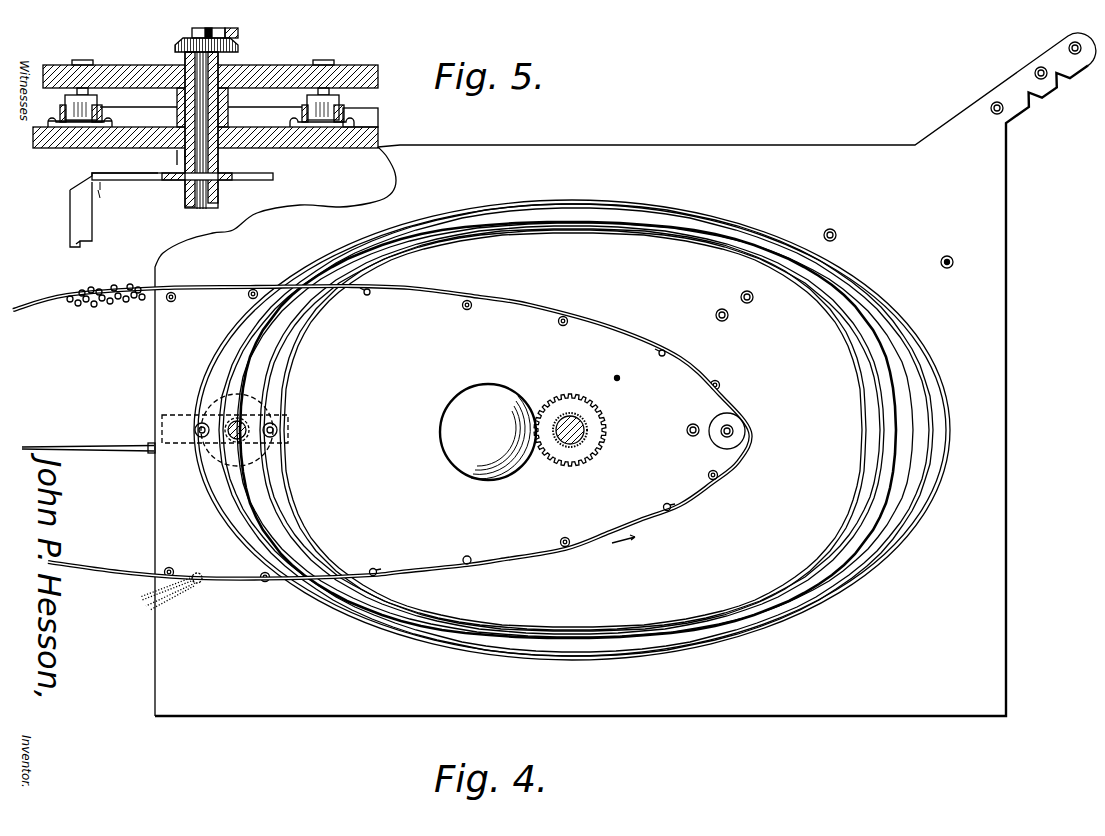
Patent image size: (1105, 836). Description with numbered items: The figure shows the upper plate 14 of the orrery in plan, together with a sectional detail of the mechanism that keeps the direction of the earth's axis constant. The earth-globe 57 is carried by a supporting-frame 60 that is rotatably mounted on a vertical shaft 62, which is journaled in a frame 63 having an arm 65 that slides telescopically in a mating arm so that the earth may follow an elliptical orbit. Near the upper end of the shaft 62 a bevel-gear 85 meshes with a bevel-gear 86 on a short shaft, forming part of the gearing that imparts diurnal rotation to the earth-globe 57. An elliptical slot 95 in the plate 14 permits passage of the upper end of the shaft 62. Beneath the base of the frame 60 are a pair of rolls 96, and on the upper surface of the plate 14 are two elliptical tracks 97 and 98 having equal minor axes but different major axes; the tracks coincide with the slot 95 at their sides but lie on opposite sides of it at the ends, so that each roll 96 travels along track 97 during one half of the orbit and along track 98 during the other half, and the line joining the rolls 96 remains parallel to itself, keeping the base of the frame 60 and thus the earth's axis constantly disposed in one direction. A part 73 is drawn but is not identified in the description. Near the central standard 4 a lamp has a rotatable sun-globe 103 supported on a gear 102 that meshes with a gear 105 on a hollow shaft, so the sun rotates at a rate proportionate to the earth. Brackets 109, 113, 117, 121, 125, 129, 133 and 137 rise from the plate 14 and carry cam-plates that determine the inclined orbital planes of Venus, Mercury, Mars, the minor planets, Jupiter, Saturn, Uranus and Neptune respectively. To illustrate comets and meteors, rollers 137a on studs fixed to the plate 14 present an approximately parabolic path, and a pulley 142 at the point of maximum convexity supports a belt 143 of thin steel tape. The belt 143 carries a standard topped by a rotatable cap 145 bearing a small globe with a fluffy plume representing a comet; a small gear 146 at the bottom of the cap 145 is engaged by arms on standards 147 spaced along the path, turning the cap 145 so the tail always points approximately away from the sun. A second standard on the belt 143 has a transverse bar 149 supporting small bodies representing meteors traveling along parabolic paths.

In FIG. 4, the central standard 4 is at (582, 422).
In FIG. 5, the plate 14 is at (273, 147).
In FIG. 4, the plate 14 is at (779, 157).
In FIG. 4, the earth-globe 57 is at (205, 398).
In FIG. 5, the supporting-frame 60 is at (104, 65).
In FIG. 4, the supporting-frame 60 is at (292, 418).
In FIG. 5, the vertical shaft 62 is at (198, 210).
In FIG. 4, the vertical shaft 62 is at (247, 440).
In FIG. 5, the frame 63 is at (72, 243).
In FIG. 5, the arm 65 is at (260, 181).
In FIG. 4, the rod 73 is at (115, 452).
In FIG. 5, the bevel-gear 85 is at (176, 46).
In FIG. 5, the bevel-gear 86 is at (239, 34).
In FIG. 5, the elliptical slot 95 is at (184, 152).
In FIG. 4, the elliptical slot 95 is at (262, 358).
In FIG. 5, the rolls 96 is at (78, 112).
In FIG. 4, the rolls 96 is at (198, 438).
In FIG. 5, the elliptical track 97 is at (95, 128).
In FIG. 4, the elliptical track 97 is at (233, 342).
In FIG. 5, the elliptical track 98 is at (333, 130).
In FIG. 4, the elliptical track 98 is at (298, 337).
In FIG. 4, the gear 102 is at (522, 440).
In FIG. 4, the sun-globe 103 is at (488, 432).
In FIG. 4, the gear 105 is at (577, 398).
In FIG. 4, the bracket 109 is at (721, 322).
In FIG. 4, the bracket 113 is at (690, 424).
In FIG. 4, the bracket 117 is at (752, 303).
In FIG. 4, the bracket 121 is at (836, 233).
In FIG. 4, the bracket 125 is at (947, 256).
In FIG. 4, the bracket 129 is at (990, 107).
In FIG. 4, the bracket 133 is at (1034, 71).
In FIG. 4, the bracket 137 is at (1069, 47).
In FIG. 4, the rollers 137a is at (562, 327).
In FIG. 4, the pulley 142 is at (712, 450).
In FIG. 4, the belt 143 is at (416, 283).
In FIG. 4, the cap 145 is at (201, 583).
In FIG. 4, the gear 146 is at (198, 572).
In FIG. 4, the standards 147 is at (372, 568).
In FIG. 4, the transverse bar 149 is at (72, 297).